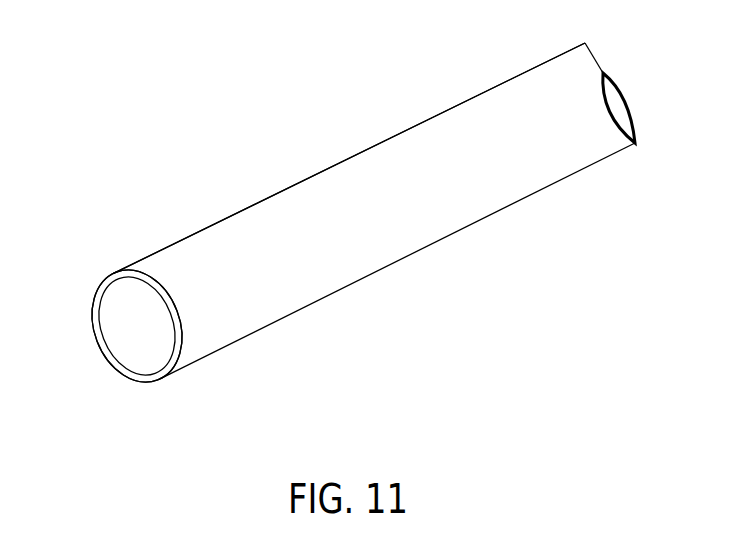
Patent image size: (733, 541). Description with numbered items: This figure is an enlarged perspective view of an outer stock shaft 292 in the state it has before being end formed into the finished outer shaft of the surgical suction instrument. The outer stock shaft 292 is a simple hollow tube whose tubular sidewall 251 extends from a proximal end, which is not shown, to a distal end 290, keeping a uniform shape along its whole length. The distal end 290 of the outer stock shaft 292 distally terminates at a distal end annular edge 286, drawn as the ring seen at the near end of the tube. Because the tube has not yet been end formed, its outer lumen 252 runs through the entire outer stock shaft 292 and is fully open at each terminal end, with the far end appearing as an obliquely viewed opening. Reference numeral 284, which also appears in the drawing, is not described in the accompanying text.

The tubular sidewall 251 is at (378, 140).
The outer lumen 252 is at (636, 82).
The outer stock shaft 292 is at (287, 172).
The proximal end rim 284 is at (148, 230).
The distal end annular edge 286 is at (133, 382).
The distal end 290 is at (83, 377).